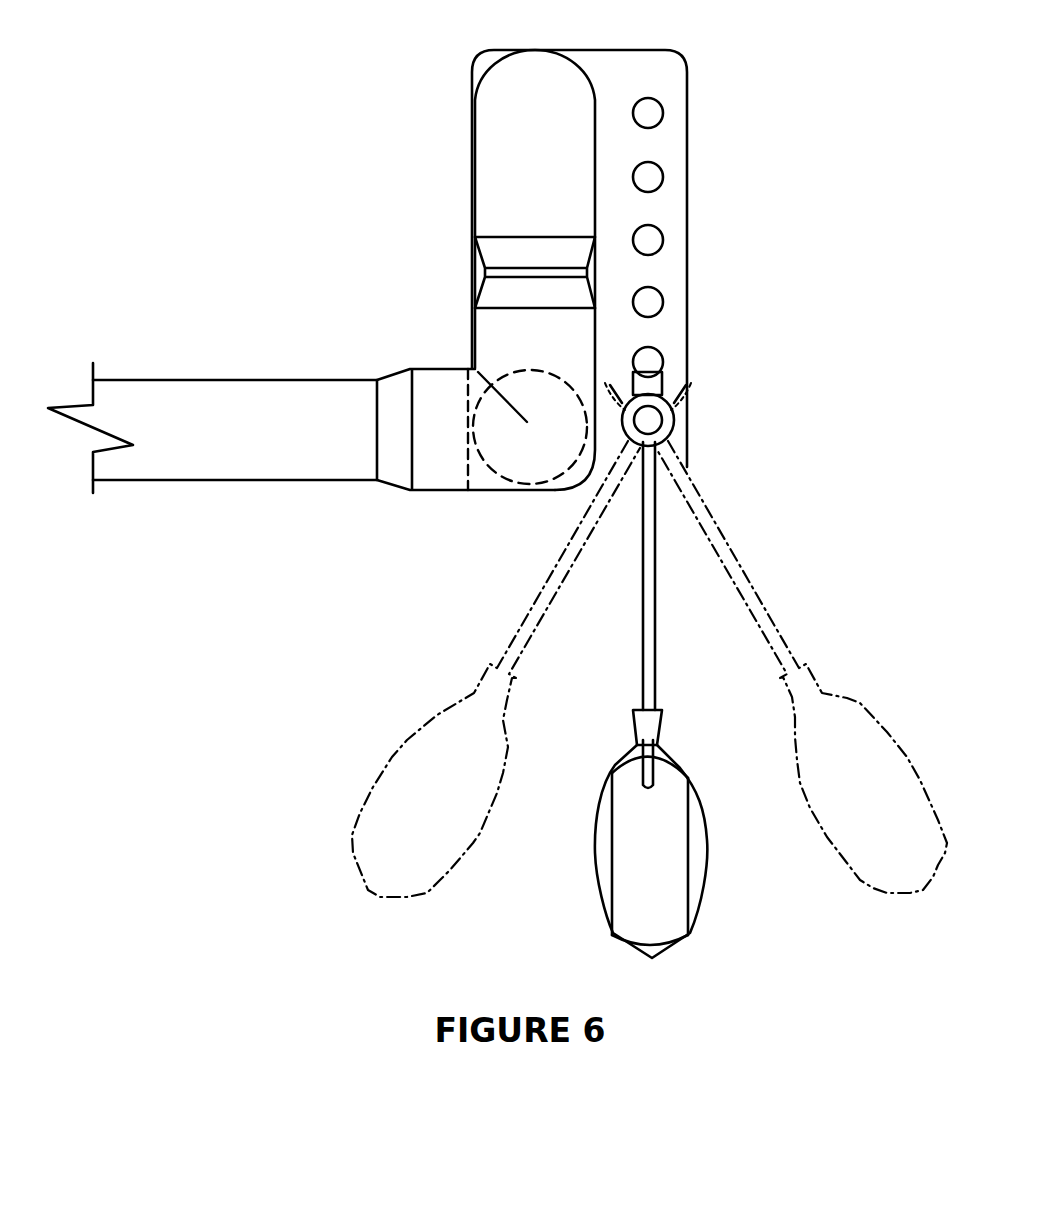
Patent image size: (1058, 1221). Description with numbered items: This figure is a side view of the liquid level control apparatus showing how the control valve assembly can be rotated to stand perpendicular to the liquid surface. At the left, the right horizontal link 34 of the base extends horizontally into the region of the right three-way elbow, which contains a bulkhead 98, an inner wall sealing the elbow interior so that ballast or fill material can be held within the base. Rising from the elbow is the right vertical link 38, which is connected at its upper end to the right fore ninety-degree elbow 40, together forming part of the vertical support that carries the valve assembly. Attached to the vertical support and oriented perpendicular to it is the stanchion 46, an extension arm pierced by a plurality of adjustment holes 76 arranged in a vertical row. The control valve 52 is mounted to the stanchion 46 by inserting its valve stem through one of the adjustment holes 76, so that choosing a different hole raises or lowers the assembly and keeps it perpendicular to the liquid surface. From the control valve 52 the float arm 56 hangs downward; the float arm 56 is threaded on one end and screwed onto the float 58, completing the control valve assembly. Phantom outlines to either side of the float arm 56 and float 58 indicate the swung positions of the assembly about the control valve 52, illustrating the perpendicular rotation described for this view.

The right horizontal link 34 is at (256, 380).
The right vertical link 38 is at (485, 270).
The right fore 90 degree elbow 40 is at (490, 67).
The stanchion 46 is at (672, 55).
The control valve 52 is at (675, 418).
The float arm 56 is at (657, 600).
The float 58 is at (698, 798).
The adjustment holes 76 is at (662, 170).
The bulkhead 98 is at (467, 450).